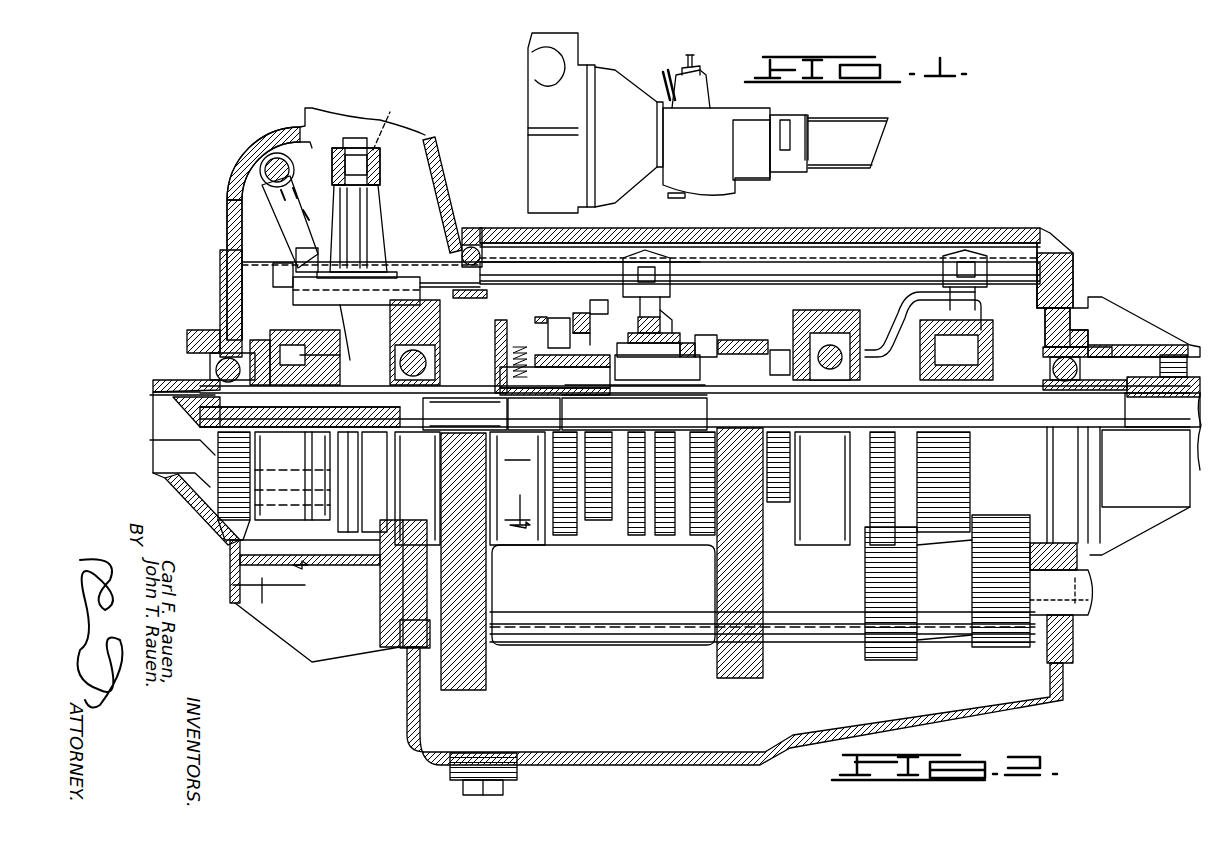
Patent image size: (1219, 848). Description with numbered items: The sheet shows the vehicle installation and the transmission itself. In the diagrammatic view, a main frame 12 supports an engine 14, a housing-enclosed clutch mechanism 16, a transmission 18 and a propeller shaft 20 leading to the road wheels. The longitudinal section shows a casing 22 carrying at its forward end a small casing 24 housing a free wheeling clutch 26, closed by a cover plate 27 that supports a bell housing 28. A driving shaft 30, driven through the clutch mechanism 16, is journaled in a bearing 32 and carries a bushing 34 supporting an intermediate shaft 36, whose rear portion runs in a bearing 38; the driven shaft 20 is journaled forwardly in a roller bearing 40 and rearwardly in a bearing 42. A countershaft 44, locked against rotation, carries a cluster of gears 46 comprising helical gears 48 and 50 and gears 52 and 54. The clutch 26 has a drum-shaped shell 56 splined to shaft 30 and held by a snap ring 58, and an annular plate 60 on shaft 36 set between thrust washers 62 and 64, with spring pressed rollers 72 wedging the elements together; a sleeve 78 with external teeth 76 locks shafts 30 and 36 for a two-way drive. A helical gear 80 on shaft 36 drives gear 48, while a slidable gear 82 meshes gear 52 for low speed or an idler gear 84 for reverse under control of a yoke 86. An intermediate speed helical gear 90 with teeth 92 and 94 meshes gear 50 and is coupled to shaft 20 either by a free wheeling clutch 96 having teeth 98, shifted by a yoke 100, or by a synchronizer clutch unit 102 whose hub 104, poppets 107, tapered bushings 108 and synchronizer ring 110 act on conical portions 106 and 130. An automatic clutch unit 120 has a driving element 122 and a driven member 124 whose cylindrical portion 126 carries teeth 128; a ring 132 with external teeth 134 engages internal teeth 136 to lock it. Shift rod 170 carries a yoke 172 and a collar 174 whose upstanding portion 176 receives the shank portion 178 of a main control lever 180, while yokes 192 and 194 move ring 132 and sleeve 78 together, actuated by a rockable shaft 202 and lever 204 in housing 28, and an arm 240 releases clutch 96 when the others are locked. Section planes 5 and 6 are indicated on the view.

In FIG. 1, the main frame 12 is at (840, 118).
In FIG. 1, the engine 14 is at (561, 123).
In FIG. 1, the housing-enclosed clutch mechanism 16 is at (629, 137).
In FIG. 1, the transmission 18 is at (716, 153).
In FIG. 1, the propeller shaft 20 is at (790, 122).
In FIG. 2, the propeller shaft 20 is at (1124, 474).
In FIG. 2, the casing 22 is at (705, 768).
In FIG. 2, the casing 24 is at (232, 552).
In FIG. 2, the free wheeling clutch 26 is at (350, 540).
In FIG. 2, the cover plate 27 is at (1035, 228).
In FIG. 1, the bell housing 28 is at (698, 82).
In FIG. 2, the bell housing 28 is at (438, 158).
In FIG. 2, the driving shaft 30 is at (276, 439).
In FIG. 2, the bearing 32 is at (200, 365).
In FIG. 2, the bushing 34 is at (155, 405).
In FIG. 2, the intermediate shaft 36 is at (372, 580).
In FIG. 2, the bearing 38 is at (417, 488).
In FIG. 2, the roller bearing 40 is at (450, 398).
In FIG. 2, the bearing 42 is at (1063, 533).
In FIG. 2, the countershaft 44 is at (1088, 612).
In FIG. 2, the cluster of gears 46 is at (656, 652).
In FIG. 2, the helical gear 48 is at (465, 690).
In FIG. 2, the helical gear 50 is at (712, 678).
In FIG. 2, the gear 52 is at (918, 655).
In FIG. 2, the gear 54 is at (985, 648).
In FIG. 2, the drum-shaped shell 56 is at (262, 545).
In FIG. 2, the snap ring 58 is at (215, 328).
In FIG. 2, the annular plate 60 is at (298, 430).
In FIG. 2, the thrust washer 62 is at (262, 340).
In FIG. 2, the thrust washer 64 is at (322, 430).
In FIG. 2, the spring pressed roller 72 is at (292, 340).
In FIG. 2, the external teeth 76 is at (372, 500).
In FIG. 2, the sleeve 78 is at (355, 480).
In FIG. 2, the helical gear 80 is at (443, 388).
In FIG. 2, the gear 82 is at (990, 372).
In FIG. 2, the idler gear 84 is at (1020, 525).
In FIG. 2, the yoke 86 is at (982, 304).
In FIG. 2, the intermediate speed helical gear 90 is at (750, 340).
In FIG. 2, the external teeth 92 is at (703, 510).
In FIG. 2, the external teeth 94 is at (780, 505).
In FIG. 2, the free wheeling clutch 96 is at (845, 548).
In FIG. 2, the teeth 98 is at (810, 335).
In FIG. 2, the yoke 100 is at (870, 296).
In FIG. 2, the synchronizer clutch unit 102 is at (640, 540).
In FIG. 2, the hub 104 is at (634, 407).
In FIG. 2, the conical portion 106 is at (694, 338).
In FIG. 2, the spring-pressed poppets 107 is at (592, 330).
In FIG. 2, the tapered bushing 108 is at (650, 380).
In FIG. 2, the synchronizer ring 110 is at (660, 312).
In FIG. 2, the automatic clutch unit 120 is at (546, 538).
In FIG. 2, the driving element 122 is at (603, 595).
In FIG. 2, the driven member 124 is at (575, 538).
In FIG. 2, the cylindrical portion 126 is at (600, 525).
In FIG. 2, the teeth 128 is at (602, 324).
In FIG. 2, the conical portion 130 is at (600, 366).
In FIG. 2, the ring 132 is at (570, 440).
In FIG. 2, the external teeth 134 is at (560, 309).
In FIG. 2, the internal teeth 136 is at (530, 320).
In FIG. 2, the shift rod 170 is at (718, 268).
In FIG. 2, the yoke 172 is at (605, 299).
In FIG. 2, the collar 174 is at (398, 265).
In FIG. 2, the upstanding portion 176 is at (380, 172).
In FIG. 2, the shank portion 178 is at (401, 123).
In FIG. 1, the main control lever 180 is at (690, 56).
In FIG. 2, the main control lever 180 is at (356, 138).
In FIG. 2, the yoke 192 is at (622, 262).
In FIG. 2, the yoke 194 is at (352, 320).
In FIG. 2, the rockable shaft 202 is at (262, 168).
In FIG. 2, the lever 204 is at (280, 215).
In FIG. 2, the arm 240 is at (912, 310).
In FIG. 2, the section line 5 is at (280, 325).
In FIG. 2, the section line 6 is at (508, 230).